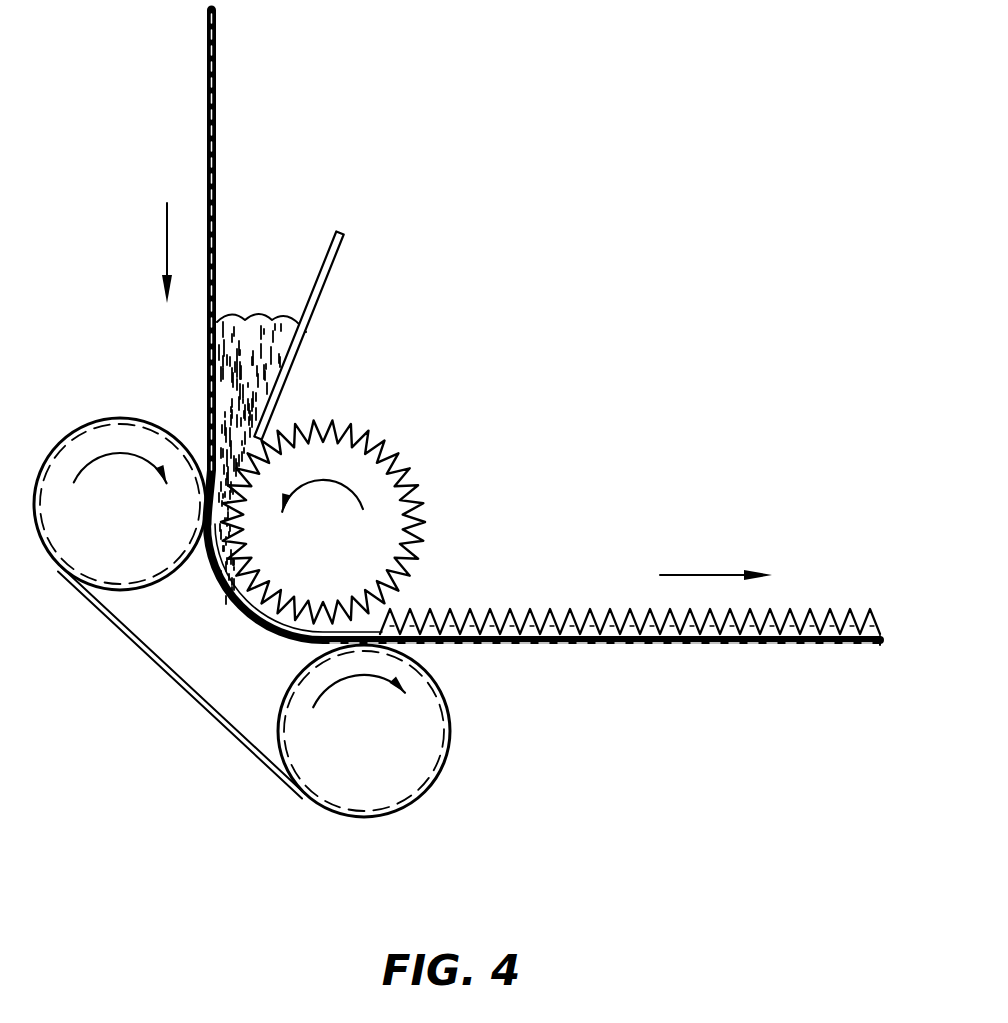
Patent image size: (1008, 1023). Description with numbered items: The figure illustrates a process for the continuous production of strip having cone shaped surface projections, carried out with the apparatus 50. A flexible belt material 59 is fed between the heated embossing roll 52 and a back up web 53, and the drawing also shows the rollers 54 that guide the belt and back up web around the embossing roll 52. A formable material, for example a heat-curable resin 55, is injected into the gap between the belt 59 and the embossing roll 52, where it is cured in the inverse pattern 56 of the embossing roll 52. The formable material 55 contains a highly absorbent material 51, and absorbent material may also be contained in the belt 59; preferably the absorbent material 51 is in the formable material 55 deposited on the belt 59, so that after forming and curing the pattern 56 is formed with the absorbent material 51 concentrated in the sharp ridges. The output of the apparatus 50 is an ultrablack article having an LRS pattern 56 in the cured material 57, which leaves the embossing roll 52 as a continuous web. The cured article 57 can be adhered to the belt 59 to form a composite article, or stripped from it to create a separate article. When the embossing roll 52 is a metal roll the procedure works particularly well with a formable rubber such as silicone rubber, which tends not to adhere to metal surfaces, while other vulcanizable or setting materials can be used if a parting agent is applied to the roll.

The apparatus 50 is at (447, 227).
The absorbent material 51 is at (258, 383).
The embossing roll 52 is at (336, 546).
The back up web 53 is at (155, 655).
The belt rollers 54 is at (303, 666).
The heat-curable resin 55 is at (265, 308).
The pattern 56 is at (465, 602).
The cured material 57 is at (832, 648).
The flexible belt material 59 is at (207, 68).